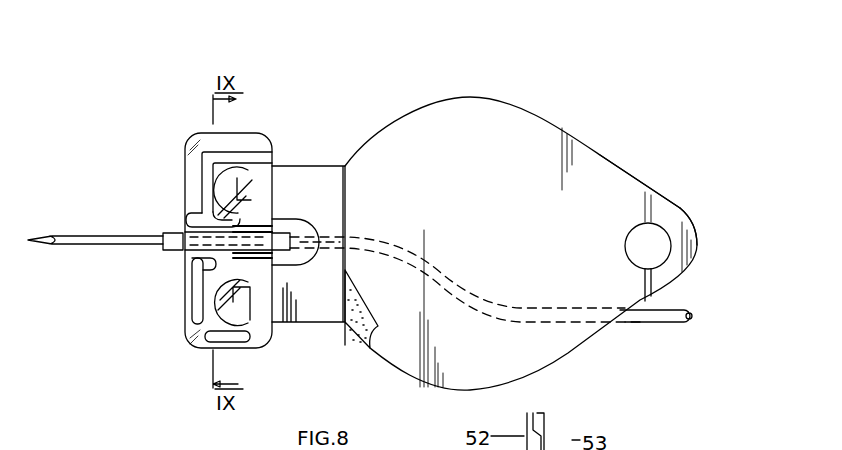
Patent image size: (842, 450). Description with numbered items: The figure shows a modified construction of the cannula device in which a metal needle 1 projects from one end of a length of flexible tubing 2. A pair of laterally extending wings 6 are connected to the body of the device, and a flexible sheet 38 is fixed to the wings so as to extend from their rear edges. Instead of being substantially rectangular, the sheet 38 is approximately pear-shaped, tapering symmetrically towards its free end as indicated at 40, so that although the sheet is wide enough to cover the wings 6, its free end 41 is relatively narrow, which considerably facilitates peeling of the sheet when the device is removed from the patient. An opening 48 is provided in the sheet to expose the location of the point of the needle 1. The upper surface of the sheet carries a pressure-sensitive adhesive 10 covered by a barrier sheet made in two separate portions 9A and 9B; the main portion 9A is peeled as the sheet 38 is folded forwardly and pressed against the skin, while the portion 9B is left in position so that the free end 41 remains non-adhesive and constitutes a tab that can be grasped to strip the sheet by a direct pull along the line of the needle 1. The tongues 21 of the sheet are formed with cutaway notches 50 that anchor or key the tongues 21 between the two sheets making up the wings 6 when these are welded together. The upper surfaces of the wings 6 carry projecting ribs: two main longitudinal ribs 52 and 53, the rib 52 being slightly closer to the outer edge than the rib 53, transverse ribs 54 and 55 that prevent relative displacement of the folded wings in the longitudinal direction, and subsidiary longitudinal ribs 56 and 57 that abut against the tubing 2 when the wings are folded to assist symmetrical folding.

The needle 1 is at (92, 238).
The flexible tubing 2 is at (672, 323).
The wings 6 is at (273, 146).
The main barrier sheet portion 9A is at (584, 340).
The barrier sheet portion 9B is at (669, 268).
The pressure-sensitive adhesive 10 is at (358, 340).
The tongues 21 is at (315, 173).
The flexible sheet 38 is at (507, 109).
The tapering portion 40 is at (604, 155).
The free end 41 is at (696, 229).
The opening 48 is at (652, 232).
The notches 50 is at (240, 183).
The main longitudinal rib 52 is at (218, 338).
The main longitudinal rib 53 is at (229, 153).
The transverse rib 54 is at (197, 302).
The transverse rib 55 is at (203, 181).
The subsidiary longitudinal rib 56 is at (200, 262).
The subsidiary longitudinal rib 57 is at (190, 219).